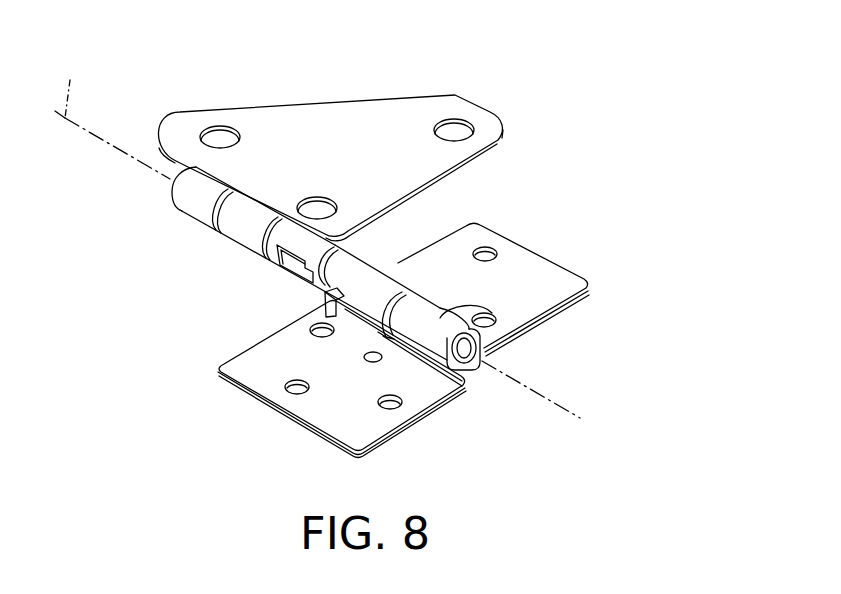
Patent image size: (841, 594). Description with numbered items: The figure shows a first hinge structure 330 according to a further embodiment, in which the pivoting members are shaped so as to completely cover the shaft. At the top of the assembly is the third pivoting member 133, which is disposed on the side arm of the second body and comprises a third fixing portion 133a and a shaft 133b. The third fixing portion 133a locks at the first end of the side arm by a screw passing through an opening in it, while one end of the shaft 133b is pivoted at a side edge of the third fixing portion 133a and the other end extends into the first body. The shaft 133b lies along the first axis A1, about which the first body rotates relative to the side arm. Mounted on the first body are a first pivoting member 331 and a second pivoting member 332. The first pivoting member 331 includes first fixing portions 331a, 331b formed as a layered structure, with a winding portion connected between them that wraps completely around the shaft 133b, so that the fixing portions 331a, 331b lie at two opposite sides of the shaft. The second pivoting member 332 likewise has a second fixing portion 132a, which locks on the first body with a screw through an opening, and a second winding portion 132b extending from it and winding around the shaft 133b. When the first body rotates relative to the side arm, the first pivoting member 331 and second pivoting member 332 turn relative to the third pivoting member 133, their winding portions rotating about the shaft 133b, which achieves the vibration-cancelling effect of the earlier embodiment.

The first hinge structure 330 is at (488, 64).
The third pivoting member 133 is at (363, 35).
The third fixing portion 133a is at (347, 136).
The shaft 133b is at (258, 215).
The first pivoting member 331 is at (122, 307).
The first fixing portion 331a is at (262, 385).
The first fixing portion 331b is at (357, 283).
The second pivoting member 332 is at (668, 255).
The second fixing portion 132a is at (538, 290).
The second winding portion 132b is at (492, 313).
The first axis A1 is at (317, 234).